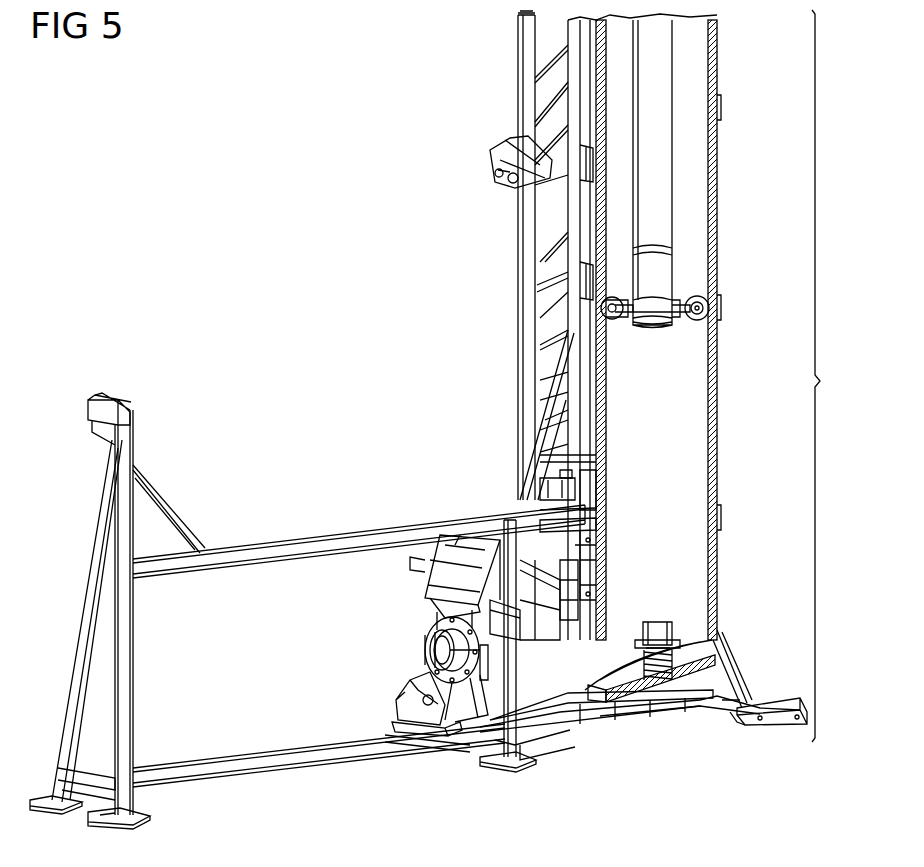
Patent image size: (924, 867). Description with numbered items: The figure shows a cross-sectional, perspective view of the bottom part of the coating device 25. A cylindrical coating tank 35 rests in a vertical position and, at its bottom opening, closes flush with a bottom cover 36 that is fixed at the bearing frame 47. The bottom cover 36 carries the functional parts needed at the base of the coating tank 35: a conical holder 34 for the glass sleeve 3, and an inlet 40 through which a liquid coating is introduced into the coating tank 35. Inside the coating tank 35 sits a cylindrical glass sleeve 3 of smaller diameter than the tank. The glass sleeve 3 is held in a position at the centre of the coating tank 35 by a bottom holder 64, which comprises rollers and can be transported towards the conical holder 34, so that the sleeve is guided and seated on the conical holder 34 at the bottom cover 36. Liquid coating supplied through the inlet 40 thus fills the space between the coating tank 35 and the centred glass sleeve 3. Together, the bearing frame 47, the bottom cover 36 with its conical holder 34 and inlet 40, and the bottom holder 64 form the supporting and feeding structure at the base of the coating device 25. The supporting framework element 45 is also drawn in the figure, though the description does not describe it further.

The glass sleeve 3 is at (661, 85).
The coating device 25 is at (834, 376).
The conical holder 34 is at (658, 628).
The coating tank 35 is at (716, 163).
The bottom cover 36 is at (632, 668).
The inlet 40 is at (562, 668).
The support post 45 is at (120, 455).
The bearing frame 47 is at (523, 100).
The bottom holder 64 is at (698, 322).